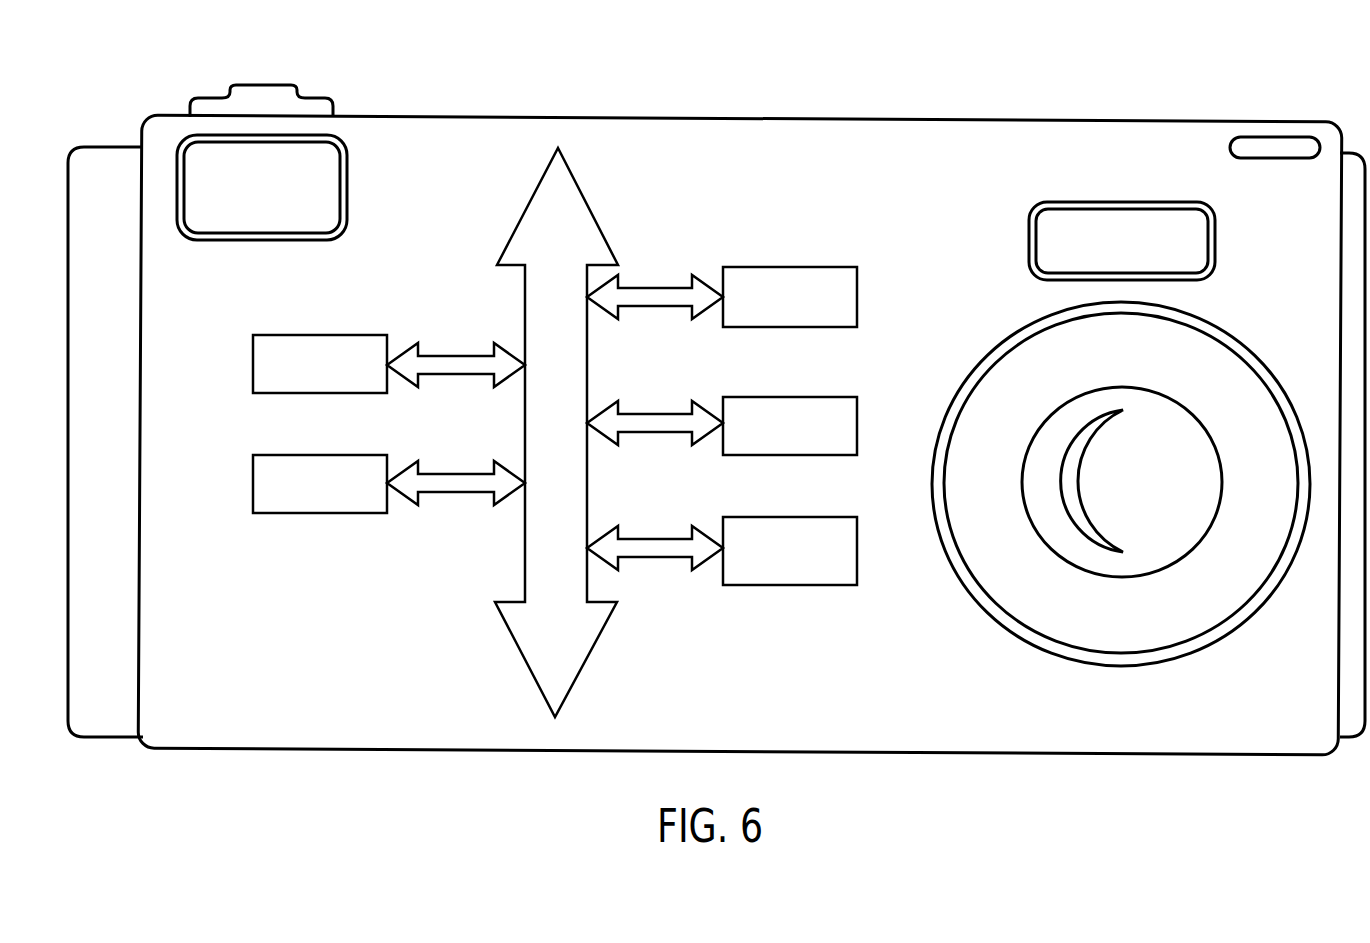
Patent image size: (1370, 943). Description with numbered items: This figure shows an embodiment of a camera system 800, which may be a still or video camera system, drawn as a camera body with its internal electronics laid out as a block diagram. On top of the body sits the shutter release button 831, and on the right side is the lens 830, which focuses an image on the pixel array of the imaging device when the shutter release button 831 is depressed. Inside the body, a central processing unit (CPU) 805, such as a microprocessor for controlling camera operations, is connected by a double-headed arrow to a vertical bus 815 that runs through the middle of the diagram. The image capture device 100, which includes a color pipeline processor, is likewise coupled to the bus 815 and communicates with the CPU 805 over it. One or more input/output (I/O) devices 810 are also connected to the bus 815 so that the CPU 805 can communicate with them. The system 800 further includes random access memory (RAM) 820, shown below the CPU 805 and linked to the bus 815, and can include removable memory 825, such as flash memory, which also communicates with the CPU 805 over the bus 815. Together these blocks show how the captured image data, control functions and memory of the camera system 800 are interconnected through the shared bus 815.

The camera system 800 is at (1161, 82).
The shutter release button 831 is at (258, 84).
The lens 830 is at (1210, 325).
The bus 815 is at (527, 668).
The central processing unit (CPU) 805 is at (253, 368).
The random access memory (RAM) 820 is at (253, 490).
The image capture device 100 is at (857, 302).
The input/output (I/O) device 810 is at (857, 427).
The removable memory 825 is at (857, 552).